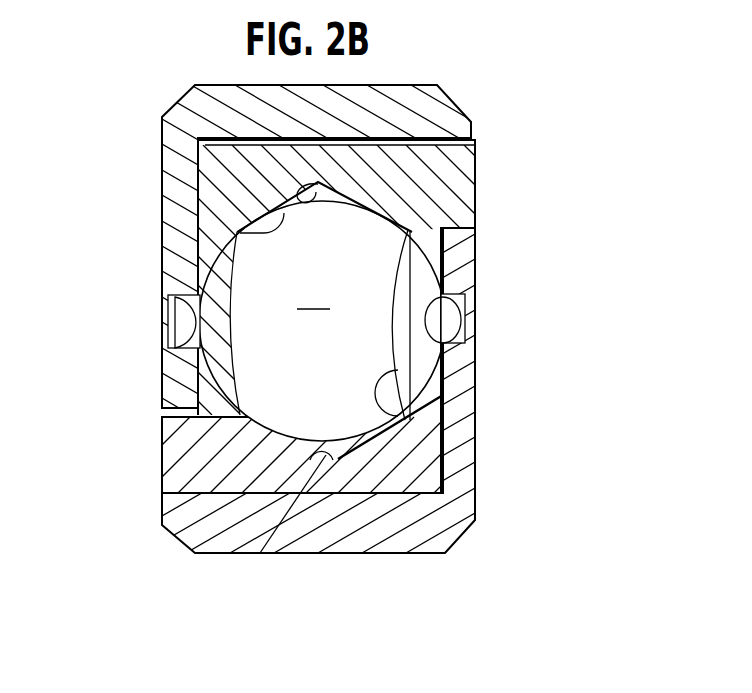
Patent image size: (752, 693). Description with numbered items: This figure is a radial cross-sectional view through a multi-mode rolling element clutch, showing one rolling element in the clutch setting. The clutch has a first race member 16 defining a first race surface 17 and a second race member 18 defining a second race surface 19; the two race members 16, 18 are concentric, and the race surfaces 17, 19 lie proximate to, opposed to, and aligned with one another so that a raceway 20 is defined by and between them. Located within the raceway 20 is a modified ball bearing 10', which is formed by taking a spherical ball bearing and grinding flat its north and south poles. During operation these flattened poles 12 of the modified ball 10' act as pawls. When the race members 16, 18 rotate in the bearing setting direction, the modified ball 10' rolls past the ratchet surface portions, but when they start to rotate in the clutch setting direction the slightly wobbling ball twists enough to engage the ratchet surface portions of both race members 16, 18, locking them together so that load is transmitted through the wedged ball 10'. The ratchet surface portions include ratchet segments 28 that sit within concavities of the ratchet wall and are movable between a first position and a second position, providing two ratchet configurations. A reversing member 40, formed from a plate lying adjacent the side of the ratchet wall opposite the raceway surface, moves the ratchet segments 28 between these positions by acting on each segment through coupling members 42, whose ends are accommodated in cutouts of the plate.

The modified ball bearing 10' is at (322, 321).
The flattened pole 12 is at (448, 420).
The first race member 16 is at (475, 177).
The first race surface 17 is at (198, 142).
The second race member 18 is at (162, 458).
The second race surface 19 is at (263, 553).
The raceway 20 is at (200, 205).
The ratchet segment 28 is at (425, 272).
The reversing member 40 is at (455, 104).
The coupling member 42 is at (182, 317).